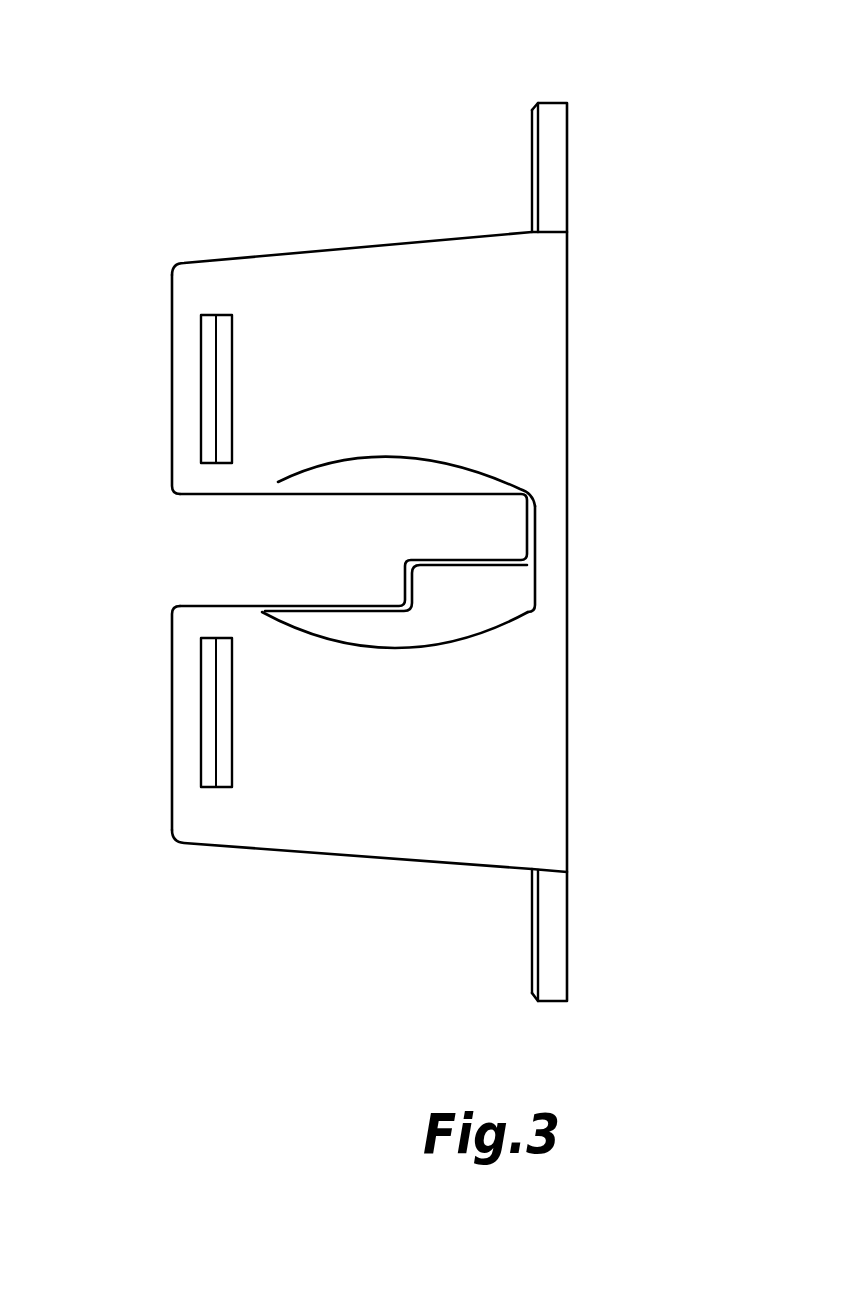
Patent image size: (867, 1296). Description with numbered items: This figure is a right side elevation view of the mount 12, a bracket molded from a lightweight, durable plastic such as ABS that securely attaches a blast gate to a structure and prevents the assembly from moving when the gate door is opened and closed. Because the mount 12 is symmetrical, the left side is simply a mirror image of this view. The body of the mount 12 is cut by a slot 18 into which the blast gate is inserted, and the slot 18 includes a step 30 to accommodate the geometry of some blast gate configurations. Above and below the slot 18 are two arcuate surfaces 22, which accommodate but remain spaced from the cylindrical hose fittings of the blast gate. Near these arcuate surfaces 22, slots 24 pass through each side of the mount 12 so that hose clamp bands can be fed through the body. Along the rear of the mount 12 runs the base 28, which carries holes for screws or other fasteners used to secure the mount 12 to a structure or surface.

The mount 12 is at (238, 184).
The slot 18 is at (493, 530).
The arcuate surfaces 22 is at (172, 312).
The slots 24 is at (225, 410).
The base 28 is at (564, 152).
The step 30 is at (403, 573).